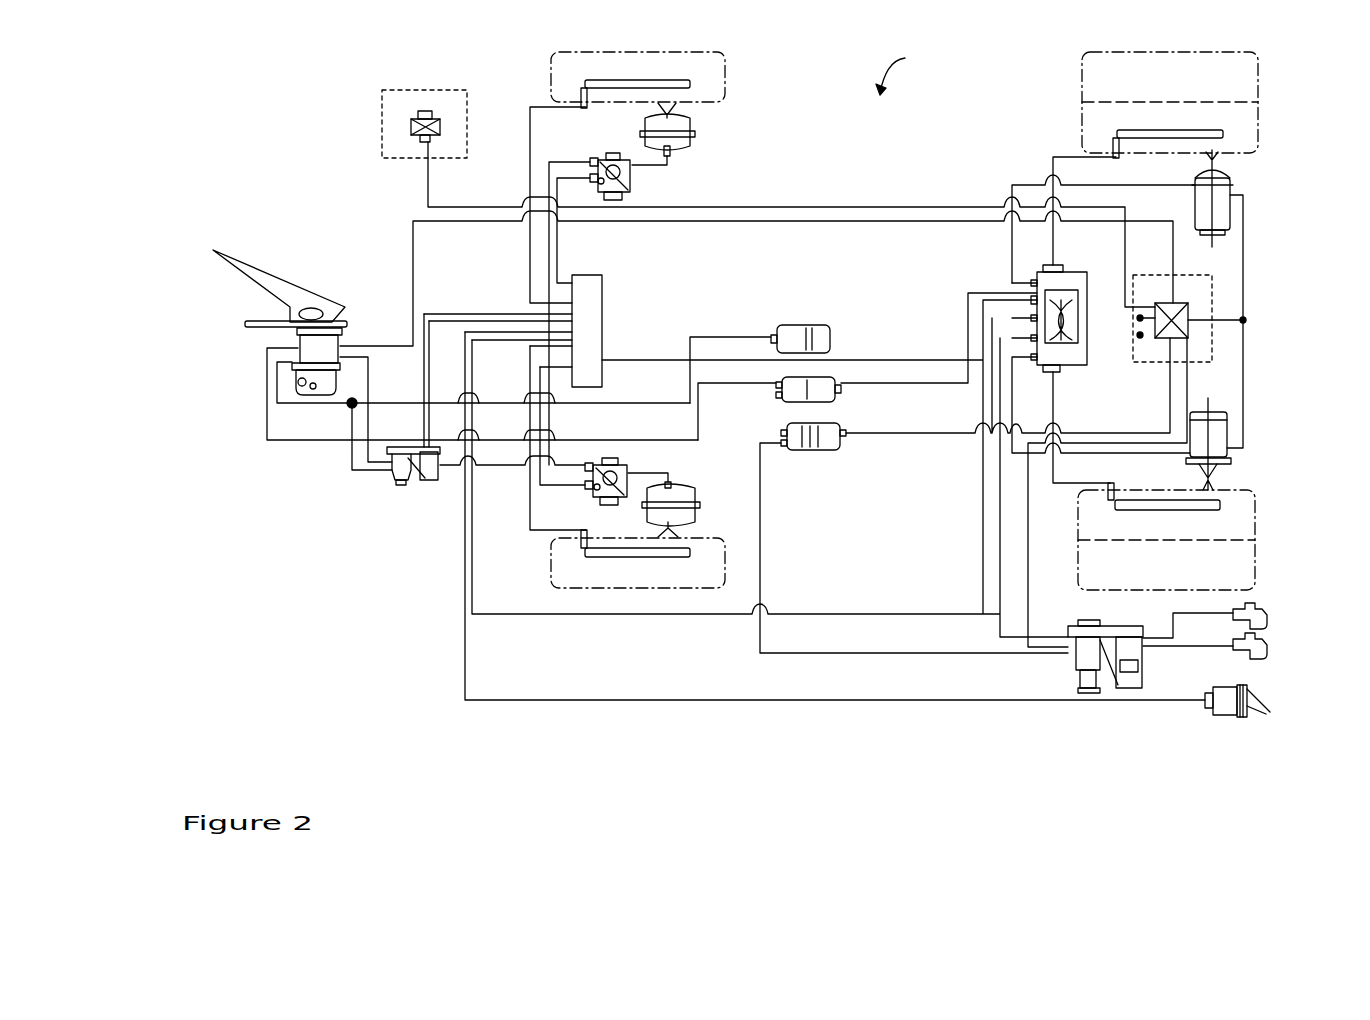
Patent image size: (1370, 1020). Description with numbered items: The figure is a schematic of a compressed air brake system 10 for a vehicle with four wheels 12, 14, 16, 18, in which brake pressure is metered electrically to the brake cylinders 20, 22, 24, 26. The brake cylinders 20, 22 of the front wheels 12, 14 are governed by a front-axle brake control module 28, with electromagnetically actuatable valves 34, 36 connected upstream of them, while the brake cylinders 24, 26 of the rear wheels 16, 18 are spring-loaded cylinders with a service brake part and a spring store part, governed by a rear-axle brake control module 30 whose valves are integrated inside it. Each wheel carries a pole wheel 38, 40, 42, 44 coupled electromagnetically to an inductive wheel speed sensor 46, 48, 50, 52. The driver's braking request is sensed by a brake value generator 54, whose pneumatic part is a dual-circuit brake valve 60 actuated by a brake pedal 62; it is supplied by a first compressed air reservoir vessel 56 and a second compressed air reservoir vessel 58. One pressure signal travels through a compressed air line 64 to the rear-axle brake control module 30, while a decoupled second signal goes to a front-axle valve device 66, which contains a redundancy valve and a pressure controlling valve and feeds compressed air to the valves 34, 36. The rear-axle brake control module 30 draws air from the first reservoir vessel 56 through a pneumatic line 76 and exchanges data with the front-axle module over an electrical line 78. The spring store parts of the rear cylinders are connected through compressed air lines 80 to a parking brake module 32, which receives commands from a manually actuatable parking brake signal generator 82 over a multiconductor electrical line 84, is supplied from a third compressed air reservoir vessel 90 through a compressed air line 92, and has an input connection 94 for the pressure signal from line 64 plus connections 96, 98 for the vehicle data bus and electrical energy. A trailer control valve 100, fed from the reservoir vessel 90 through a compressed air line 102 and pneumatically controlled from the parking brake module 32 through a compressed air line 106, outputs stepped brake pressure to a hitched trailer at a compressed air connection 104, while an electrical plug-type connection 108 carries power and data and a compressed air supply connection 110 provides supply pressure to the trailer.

The compressed air brake system 10 is at (904, 70).
The wheel 12 is at (725, 80).
The wheel 14 is at (551, 565).
The wheel 16 is at (1256, 550).
The wheel 18 is at (1082, 92).
The brake cylinder 20 is at (695, 132).
The brake cylinder 22 is at (685, 490).
The spring-loaded brake cylinder 24 is at (1200, 410).
The spring-loaded brake cylinder 26 is at (1195, 215).
The front-axle brake control module 28 is at (603, 374).
The rear-axle brake control module 30 is at (1065, 272).
The parking brake module 32 is at (1213, 302).
The valve 34 is at (635, 178).
The valve 36 is at (612, 462).
The pole wheel 38 is at (640, 80).
The pole wheel 40 is at (648, 560).
The pole wheel 42 is at (1135, 511).
The pole wheel 44 is at (1147, 127).
The wheel speed sensor 46 is at (588, 105).
The wheel speed sensor 48 is at (592, 540).
The wheel speed sensor 50 is at (1116, 490).
The wheel speed sensor 52 is at (1113, 155).
The brake value generator 54 is at (345, 323).
The first compressed air reservoir vessel 56 is at (840, 382).
The second compressed air reservoir vessel 58 is at (832, 327).
The brake valve 60 is at (295, 378).
The brake pedal 62 is at (278, 283).
The compressed air line 64 is at (780, 221).
The front-axle valve device 66 is at (392, 478).
The pneumatic line 76 is at (920, 386).
The electrical line 78 is at (827, 614).
The compressed air lines 80 is at (1245, 358).
The parking brake signal generator 82 is at (467, 97).
The multiconductor electrical line 84 is at (792, 207).
The third compressed air reservoir vessel 90 is at (843, 447).
The compressed air line 92 is at (1068, 433).
The input connection 94 is at (1215, 298).
The connection 96 is at (1137, 318).
The connection 98 is at (1138, 335).
The trailer control valve 100 is at (1095, 622).
The compressed air line 102 is at (843, 653).
The compressed air connection 104 is at (1268, 638).
The compressed air line 106 is at (1032, 618).
The electrical plug-type connection 108 is at (1250, 691).
The compressed air supply connection 110 is at (1268, 610).